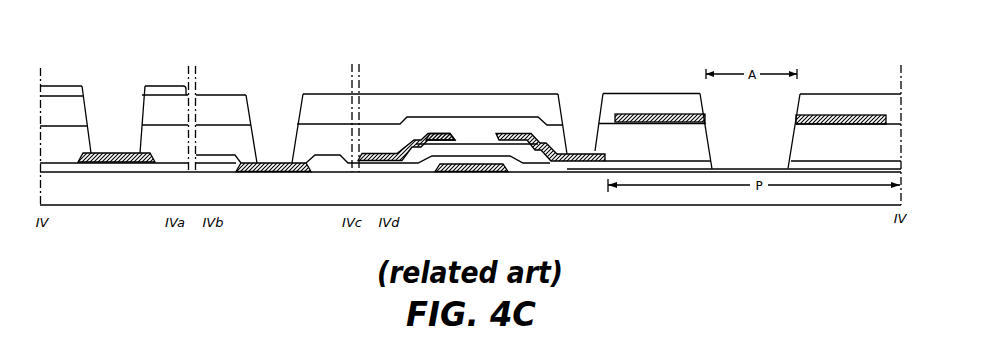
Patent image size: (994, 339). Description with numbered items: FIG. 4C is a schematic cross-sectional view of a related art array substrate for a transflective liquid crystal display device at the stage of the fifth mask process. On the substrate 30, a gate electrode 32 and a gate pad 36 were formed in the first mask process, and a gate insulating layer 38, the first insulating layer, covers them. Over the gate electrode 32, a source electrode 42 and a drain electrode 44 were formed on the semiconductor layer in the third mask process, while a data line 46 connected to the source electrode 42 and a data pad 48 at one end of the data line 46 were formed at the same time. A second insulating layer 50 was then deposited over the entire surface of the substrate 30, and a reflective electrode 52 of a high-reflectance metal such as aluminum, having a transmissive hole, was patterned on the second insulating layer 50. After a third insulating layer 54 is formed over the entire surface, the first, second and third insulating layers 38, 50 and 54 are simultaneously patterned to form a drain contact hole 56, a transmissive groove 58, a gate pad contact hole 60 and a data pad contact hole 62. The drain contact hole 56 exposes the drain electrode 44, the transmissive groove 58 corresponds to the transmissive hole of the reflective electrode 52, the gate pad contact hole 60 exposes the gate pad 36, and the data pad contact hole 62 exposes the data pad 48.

The substrate 30 is at (529, 202).
The gate electrode 32 is at (472, 175).
The gate pad 36 is at (277, 167).
The gate insulating layer 38 is at (340, 167).
The source electrode 42 is at (438, 134).
The drain electrode 44 is at (513, 132).
The data line 46 is at (382, 153).
The data pad 48 is at (113, 163).
The second insulating layer 50 is at (158, 135).
The reflective electrode 52 is at (687, 112).
The third insulating layer 54 is at (178, 103).
The drain contact hole 56 is at (581, 102).
The transmissive groove 58 is at (764, 110).
The gate pad contact hole 60 is at (270, 95).
The data pad contact hole 62 is at (106, 102).